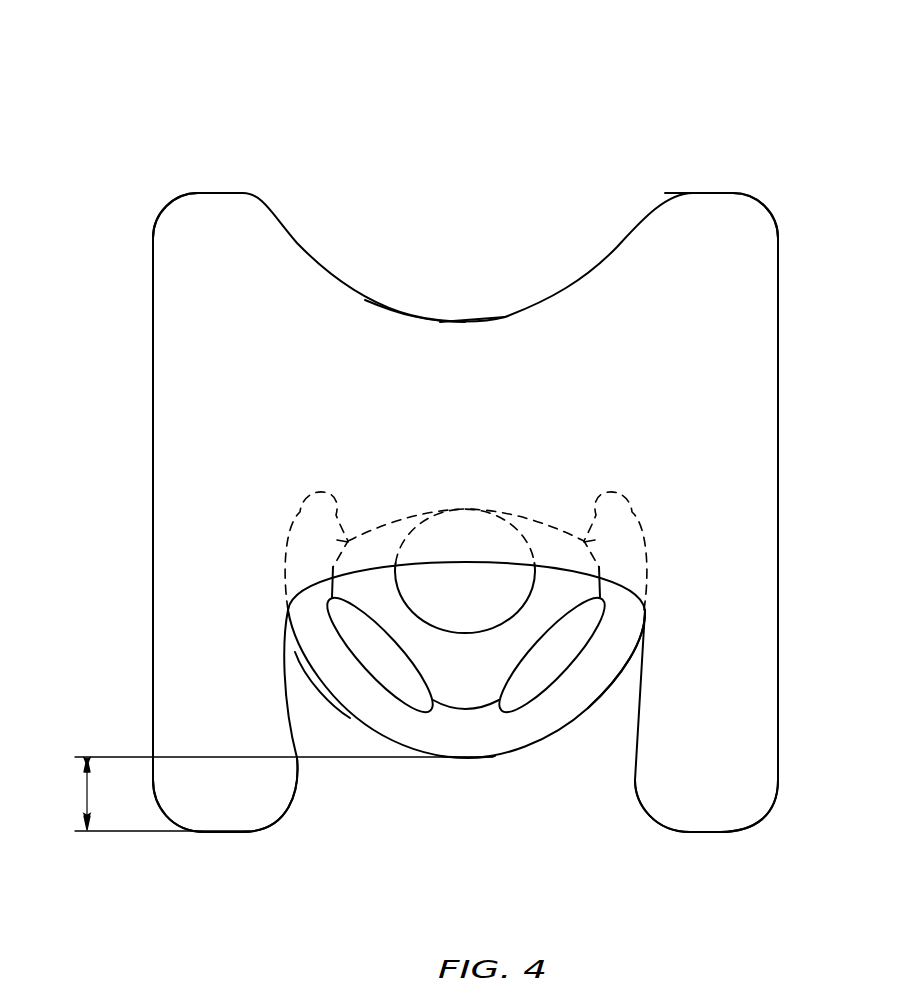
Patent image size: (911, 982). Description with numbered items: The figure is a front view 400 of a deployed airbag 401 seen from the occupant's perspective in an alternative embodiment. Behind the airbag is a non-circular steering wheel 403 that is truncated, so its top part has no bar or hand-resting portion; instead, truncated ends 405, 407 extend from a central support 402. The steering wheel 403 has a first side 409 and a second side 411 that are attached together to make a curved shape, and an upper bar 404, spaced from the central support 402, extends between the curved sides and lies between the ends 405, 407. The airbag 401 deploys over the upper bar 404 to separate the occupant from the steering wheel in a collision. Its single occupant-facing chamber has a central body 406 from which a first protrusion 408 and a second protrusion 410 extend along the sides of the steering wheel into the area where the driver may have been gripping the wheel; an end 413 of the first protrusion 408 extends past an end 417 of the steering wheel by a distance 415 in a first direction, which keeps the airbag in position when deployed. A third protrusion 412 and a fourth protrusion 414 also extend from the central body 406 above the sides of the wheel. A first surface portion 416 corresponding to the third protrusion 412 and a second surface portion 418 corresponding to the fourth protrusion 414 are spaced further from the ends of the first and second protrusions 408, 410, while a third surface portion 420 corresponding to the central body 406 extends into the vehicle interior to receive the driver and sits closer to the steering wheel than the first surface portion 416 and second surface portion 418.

The front view 400 is at (135, 55).
The airbag 401 is at (248, 190).
The central support 402 is at (465, 635).
The steering wheel 403 is at (357, 740).
The upper bar 404 is at (473, 510).
The truncated end 405 is at (614, 512).
The central body 406 is at (465, 437).
The truncated end 407 is at (318, 512).
The first protrusion 408 is at (228, 787).
The first side 409 is at (320, 692).
The second protrusion 410 is at (715, 788).
The second side 411 is at (620, 690).
The third protrusion 412 is at (197, 222).
The end of the first protrusion 413 is at (222, 832).
The fourth protrusion 414 is at (720, 218).
The distance 415 is at (85, 795).
The first surface portion 416 is at (178, 200).
The end of the steering wheel 417 is at (467, 758).
The second surface portion 418 is at (693, 193).
The third surface portion 420 is at (466, 322).